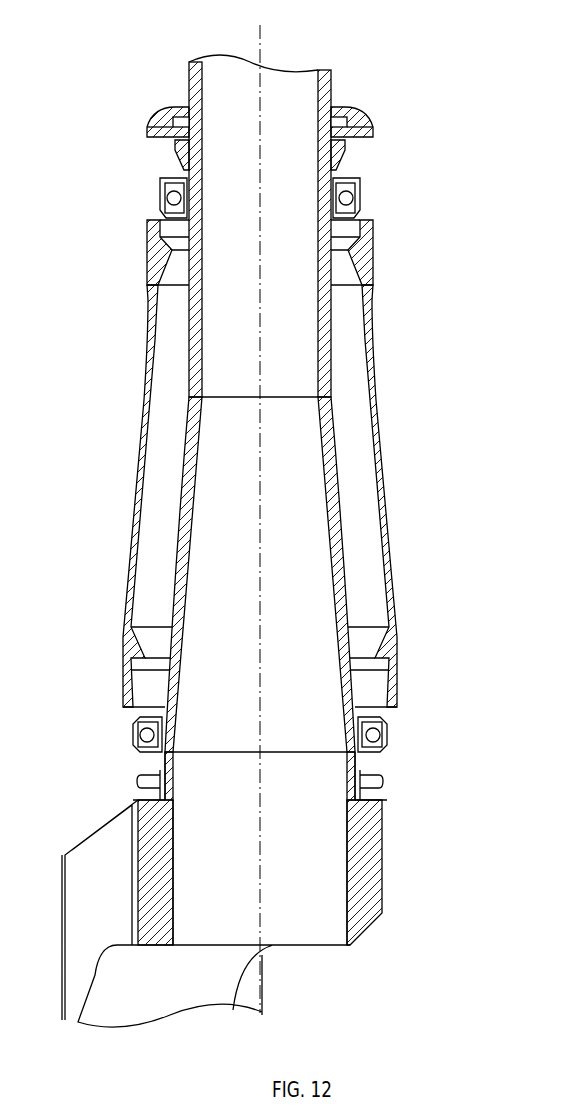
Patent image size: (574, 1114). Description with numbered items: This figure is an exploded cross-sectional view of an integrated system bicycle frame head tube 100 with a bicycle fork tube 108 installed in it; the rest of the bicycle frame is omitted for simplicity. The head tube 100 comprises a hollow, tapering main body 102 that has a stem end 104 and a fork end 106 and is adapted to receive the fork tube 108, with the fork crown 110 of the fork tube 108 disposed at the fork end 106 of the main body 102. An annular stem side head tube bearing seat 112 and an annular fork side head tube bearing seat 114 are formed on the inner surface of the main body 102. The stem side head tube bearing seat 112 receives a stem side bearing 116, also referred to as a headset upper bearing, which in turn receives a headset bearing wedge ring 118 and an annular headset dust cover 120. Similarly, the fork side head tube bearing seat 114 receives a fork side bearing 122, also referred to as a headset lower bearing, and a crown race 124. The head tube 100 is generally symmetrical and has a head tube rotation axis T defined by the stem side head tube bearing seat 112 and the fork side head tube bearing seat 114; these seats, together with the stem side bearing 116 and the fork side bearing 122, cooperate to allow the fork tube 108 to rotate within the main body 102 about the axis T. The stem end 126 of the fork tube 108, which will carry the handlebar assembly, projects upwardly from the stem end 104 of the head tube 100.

The head tube 100 is at (106, 447).
The main body 102 is at (131, 519).
The stem end 104 is at (247, 466).
The fork end 106 is at (119, 713).
The fork tube 108 is at (272, 498).
The fork crown 110 is at (235, 888).
The stem side head tube bearing seat 112 is at (350, 236).
The fork side head tube bearing seat 114 is at (375, 672).
The stem side bearing 116 is at (361, 191).
The headset bearing wedge ring 118 is at (341, 152).
The headset dust cover 120 is at (366, 118).
The fork side bearing 122 is at (386, 750).
The crown race 124 is at (386, 786).
The stem end of the fork tube 126 is at (332, 82).
The head tube rotation axis T is at (260, 43).